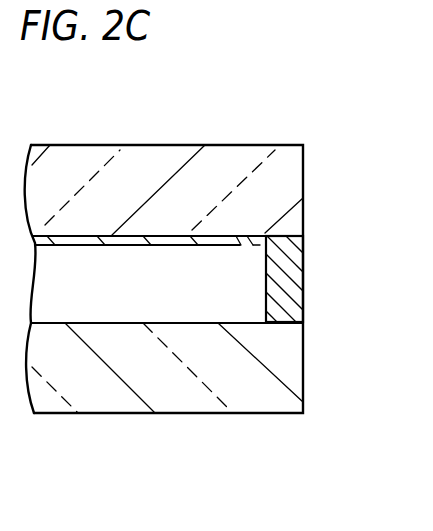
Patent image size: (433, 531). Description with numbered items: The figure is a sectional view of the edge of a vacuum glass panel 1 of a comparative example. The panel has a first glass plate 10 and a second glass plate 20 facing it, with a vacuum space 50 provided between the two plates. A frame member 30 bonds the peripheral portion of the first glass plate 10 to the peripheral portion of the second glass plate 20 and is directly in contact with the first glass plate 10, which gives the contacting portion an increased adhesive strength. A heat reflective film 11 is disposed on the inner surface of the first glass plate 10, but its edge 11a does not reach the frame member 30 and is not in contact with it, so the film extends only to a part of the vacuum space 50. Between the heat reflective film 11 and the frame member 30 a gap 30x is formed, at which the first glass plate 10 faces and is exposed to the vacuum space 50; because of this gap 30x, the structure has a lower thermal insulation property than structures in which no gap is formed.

The vacuum glass panel 1 is at (304, 150).
The first glass plate 10 is at (213, 168).
The heat reflective film 11 is at (165, 240).
The edge of the heat reflective film 11a is at (250, 240).
The second glass plate 20 is at (237, 372).
The frame member 30 is at (283, 297).
The gap 30x is at (298, 249).
The vacuum space 50 is at (117, 290).